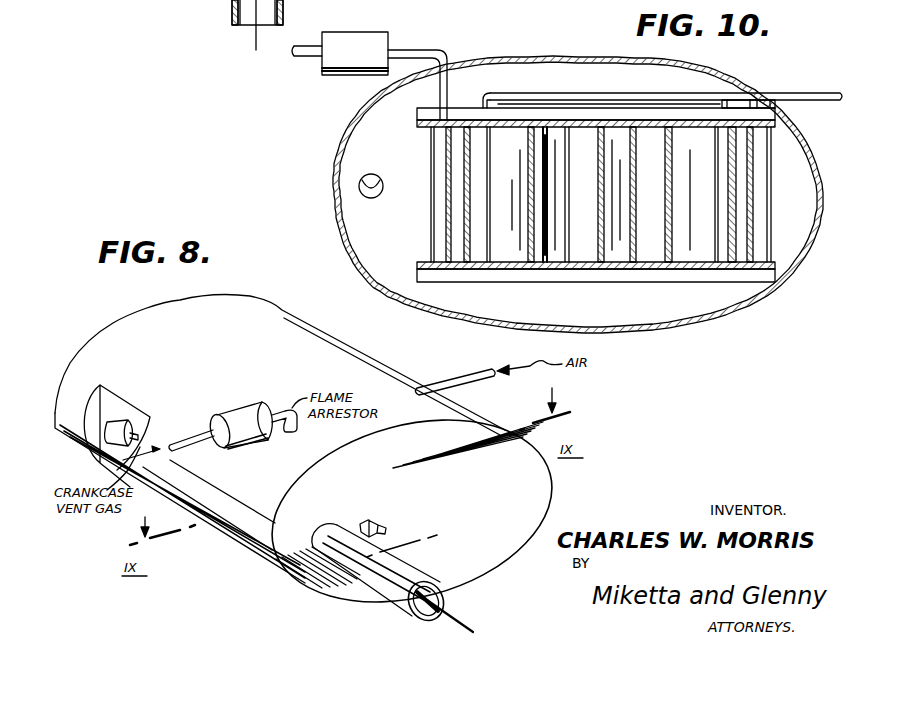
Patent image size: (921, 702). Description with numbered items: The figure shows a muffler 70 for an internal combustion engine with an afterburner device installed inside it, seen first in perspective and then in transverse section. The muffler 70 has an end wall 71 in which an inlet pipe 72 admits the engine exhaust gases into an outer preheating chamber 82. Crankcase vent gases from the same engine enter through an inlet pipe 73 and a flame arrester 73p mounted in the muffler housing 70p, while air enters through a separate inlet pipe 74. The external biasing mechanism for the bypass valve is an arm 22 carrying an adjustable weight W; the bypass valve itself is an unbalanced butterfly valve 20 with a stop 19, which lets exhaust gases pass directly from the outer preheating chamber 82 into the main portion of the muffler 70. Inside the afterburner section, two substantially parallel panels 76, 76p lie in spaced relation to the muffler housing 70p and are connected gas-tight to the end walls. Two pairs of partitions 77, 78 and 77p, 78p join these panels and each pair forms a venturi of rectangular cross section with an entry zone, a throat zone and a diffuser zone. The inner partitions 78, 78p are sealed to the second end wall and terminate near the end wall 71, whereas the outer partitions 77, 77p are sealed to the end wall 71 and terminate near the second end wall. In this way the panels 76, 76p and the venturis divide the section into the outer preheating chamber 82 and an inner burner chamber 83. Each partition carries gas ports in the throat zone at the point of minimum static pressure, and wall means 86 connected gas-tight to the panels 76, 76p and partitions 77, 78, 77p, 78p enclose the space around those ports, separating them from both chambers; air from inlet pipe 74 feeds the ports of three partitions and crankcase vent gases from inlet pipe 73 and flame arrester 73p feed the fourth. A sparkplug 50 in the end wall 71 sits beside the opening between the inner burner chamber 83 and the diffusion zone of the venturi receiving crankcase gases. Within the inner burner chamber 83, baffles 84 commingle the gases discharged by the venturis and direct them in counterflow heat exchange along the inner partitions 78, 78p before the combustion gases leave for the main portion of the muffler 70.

In FIG. 10, the stop 19 is at (366, 196).
In FIG. 10, the unbalanced butterfly valve 20 is at (376, 178).
In FIG. 8, the arm 22 is at (130, 415).
In FIG. 8, the adjustable weight W is at (122, 405).
In FIG. 8, the sparkplug 50 is at (376, 521).
In FIG. 10, the muffler 70 is at (587, 194).
In FIG. 8, the muffler 70 is at (331, 463).
In FIG. 10, the muffler housing 70p is at (798, 136).
In FIG. 8, the muffler housing 70p is at (467, 407).
In FIG. 8, the end wall 71 is at (545, 486).
In FIG. 8, the inlet pipe 72 is at (396, 604).
In FIG. 10, the inlet pipe 73 is at (410, 52).
In FIG. 8, the inlet pipe 73 is at (208, 432).
In FIG. 10, the flame arrester 73p is at (352, 30).
In FIG. 8, the flame arrester 73p is at (240, 408).
In FIG. 10, the inlet pipe 74 is at (790, 92).
In FIG. 8, the inlet pipe 74 is at (466, 372).
In FIG. 10, the panel 76 is at (417, 264).
In FIG. 10, the panel 76p is at (417, 128).
In FIG. 10, the partition 77 is at (446, 224).
In FIG. 10, the partition 77p is at (750, 238).
In FIG. 10, the partition 78 is at (470, 231).
In FIG. 10, the partition 78p is at (728, 226).
In FIG. 10, the outer preheating chamber 82 is at (798, 306).
In FIG. 10, the inner burner chamber 83 is at (693, 142).
In FIG. 10, the baffles 84 is at (667, 248).
In FIG. 10, the wall means 86 is at (431, 204).